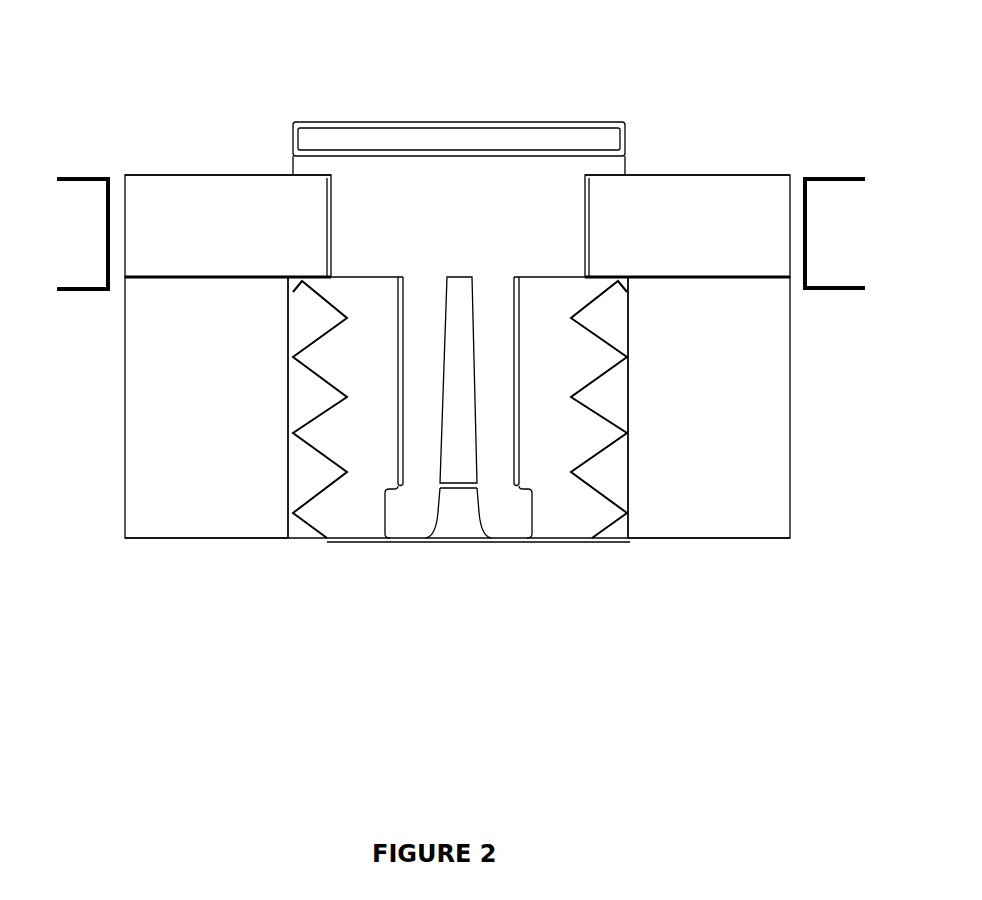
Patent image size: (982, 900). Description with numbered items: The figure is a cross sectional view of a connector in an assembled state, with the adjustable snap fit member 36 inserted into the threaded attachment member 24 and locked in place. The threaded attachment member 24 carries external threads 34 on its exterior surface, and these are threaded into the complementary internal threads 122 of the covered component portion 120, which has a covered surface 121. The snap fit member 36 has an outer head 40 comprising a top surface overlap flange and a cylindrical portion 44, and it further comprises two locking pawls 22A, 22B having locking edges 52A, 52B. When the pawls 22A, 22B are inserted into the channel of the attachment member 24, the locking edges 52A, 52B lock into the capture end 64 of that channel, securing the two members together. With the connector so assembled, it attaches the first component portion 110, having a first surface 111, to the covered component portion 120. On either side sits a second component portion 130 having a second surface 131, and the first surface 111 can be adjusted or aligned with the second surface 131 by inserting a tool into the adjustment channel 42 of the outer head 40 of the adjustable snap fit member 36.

The adjustable snap fit member 36 is at (281, 74).
The outer head 40 is at (597, 108).
The adjustment channel 42 is at (584, 137).
The cylindrical portion 44 is at (545, 220).
The first component portion 110 is at (457, 226).
The first surface 111 is at (211, 166).
The covered component portion 120 is at (457, 407).
The covered surface 121 is at (233, 284).
The internal threads 122 is at (305, 476).
The second component portion 130 is at (461, 234).
The second surface 131 is at (73, 168).
The locking pawl 22A is at (420, 397).
The locking pawl 22B is at (497, 395).
The locking edge 52A is at (406, 518).
The locking edge 52B is at (508, 514).
The capture end 64 is at (457, 514).
The threaded attachment member 24 is at (573, 555).
The external threads 34 is at (599, 484).